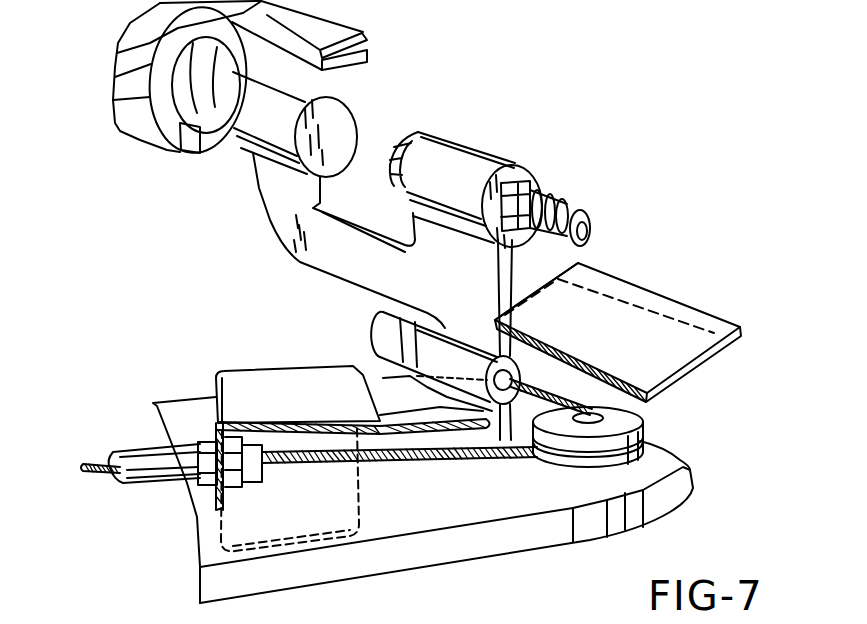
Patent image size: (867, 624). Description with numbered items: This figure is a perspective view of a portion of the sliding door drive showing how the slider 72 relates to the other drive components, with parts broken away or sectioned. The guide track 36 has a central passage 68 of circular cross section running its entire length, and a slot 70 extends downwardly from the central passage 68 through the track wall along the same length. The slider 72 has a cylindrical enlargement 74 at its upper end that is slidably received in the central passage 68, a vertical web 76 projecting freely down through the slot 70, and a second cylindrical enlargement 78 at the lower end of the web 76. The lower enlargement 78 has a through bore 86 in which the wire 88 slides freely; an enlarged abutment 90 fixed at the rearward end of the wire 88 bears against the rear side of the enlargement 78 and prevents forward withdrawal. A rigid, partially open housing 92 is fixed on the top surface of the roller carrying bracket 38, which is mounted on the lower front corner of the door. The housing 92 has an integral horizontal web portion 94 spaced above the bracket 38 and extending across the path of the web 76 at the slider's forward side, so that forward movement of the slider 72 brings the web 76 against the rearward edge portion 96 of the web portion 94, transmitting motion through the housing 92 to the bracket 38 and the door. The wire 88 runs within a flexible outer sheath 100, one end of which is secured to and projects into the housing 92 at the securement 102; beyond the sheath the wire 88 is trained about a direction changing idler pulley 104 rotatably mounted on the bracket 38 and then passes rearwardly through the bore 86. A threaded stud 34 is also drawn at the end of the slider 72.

The threaded stud 34 is at (550, 203).
The guide track 36 is at (313, 23).
The roller carrying bracket 38 is at (333, 572).
The central passage 68 is at (118, 51).
The slot 70 is at (187, 147).
The slider 72 is at (273, 231).
The cylindrical enlargement 74 is at (330, 90).
The vertical web 76 is at (495, 258).
The second cylindrical enlargement 78 is at (438, 332).
The through bore 86 is at (508, 425).
The wire 88 is at (433, 462).
The enlarged abutment 90 is at (380, 340).
The housing 92 is at (237, 374).
The horizontal web portion 94 is at (653, 317).
The rearward edge portion 96 is at (528, 282).
The flexible outer sheath 100 is at (142, 478).
The sheath end securement 102 is at (247, 487).
The direction changing idler pulley 104 is at (650, 415).